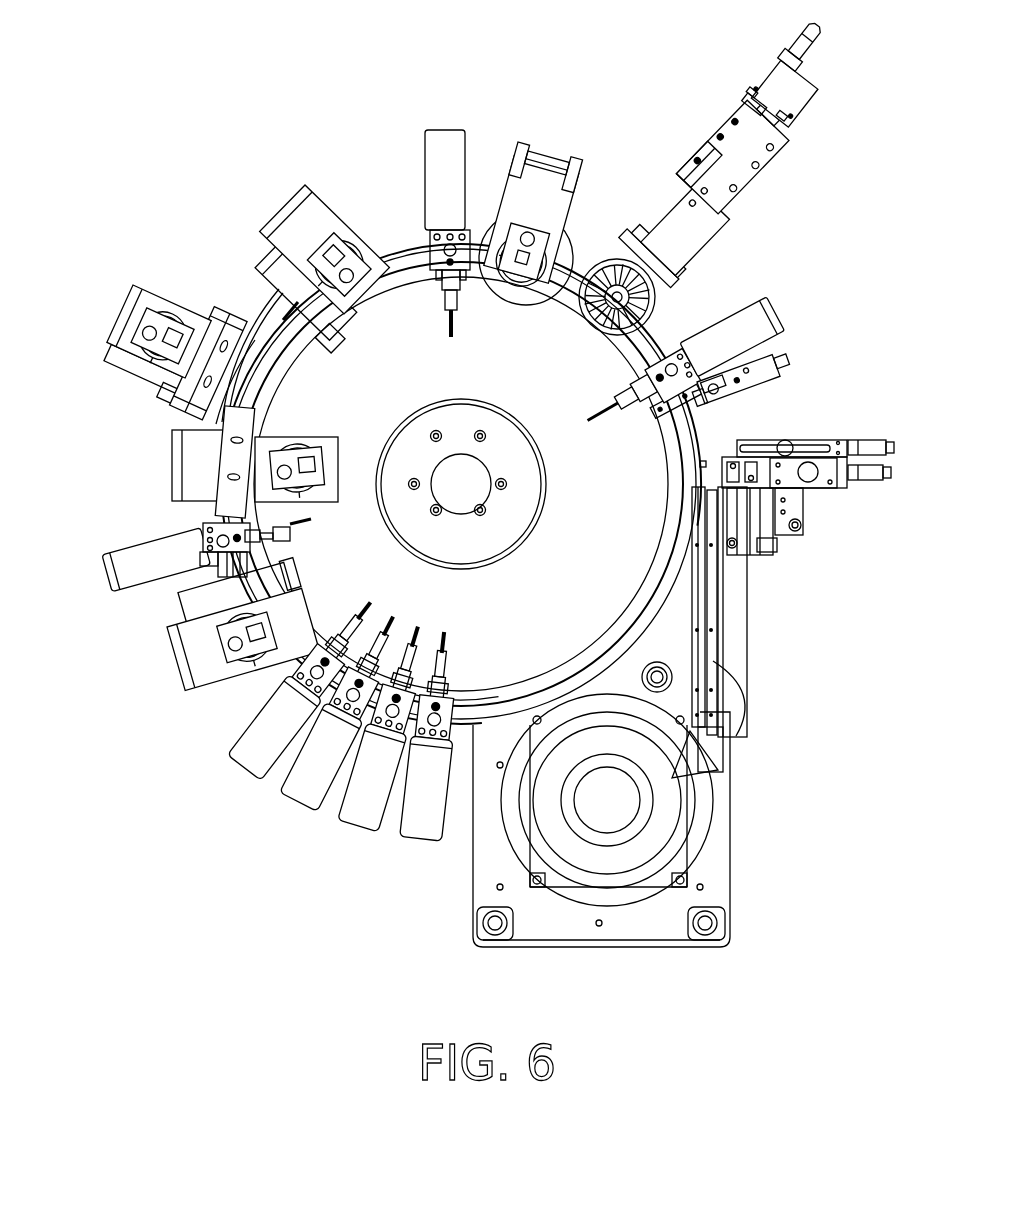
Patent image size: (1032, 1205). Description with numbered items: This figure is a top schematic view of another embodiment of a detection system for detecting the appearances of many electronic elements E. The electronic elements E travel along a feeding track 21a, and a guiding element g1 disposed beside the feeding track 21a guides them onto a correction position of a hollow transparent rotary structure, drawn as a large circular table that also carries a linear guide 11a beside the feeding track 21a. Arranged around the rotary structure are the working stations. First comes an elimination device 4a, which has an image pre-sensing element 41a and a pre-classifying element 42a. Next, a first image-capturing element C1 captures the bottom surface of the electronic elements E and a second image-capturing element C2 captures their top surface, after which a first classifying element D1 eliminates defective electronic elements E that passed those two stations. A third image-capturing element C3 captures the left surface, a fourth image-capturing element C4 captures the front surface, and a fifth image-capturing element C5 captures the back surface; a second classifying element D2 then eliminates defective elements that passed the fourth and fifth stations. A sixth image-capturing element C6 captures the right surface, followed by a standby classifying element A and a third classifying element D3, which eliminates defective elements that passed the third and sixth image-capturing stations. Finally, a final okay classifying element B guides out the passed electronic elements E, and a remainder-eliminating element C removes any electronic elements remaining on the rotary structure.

The standby classifying element A is at (240, 766).
The final okay classifying element B is at (358, 822).
The remainder-eliminating element C is at (421, 838).
The first classifying element D1 is at (447, 135).
The second classifying element D2 is at (104, 572).
The third classifying element D3 is at (296, 797).
The first image-capturing element C1 is at (743, 177).
The second image-capturing element C2 is at (542, 163).
The third image-capturing element C3 is at (305, 210).
The fourth image-capturing element C4 is at (133, 317).
The fifth image-capturing element C5 is at (187, 460).
The sixth image-capturing element C6 is at (190, 655).
The electronic elements E is at (704, 466).
The guiding element g1 is at (872, 483).
The elimination device 4a is at (754, 356).
The image pre-sensing element 41a is at (790, 357).
The pre-classifying element 42a is at (787, 307).
The linear guide rail 11a is at (680, 590).
The feeding track 21a is at (712, 663).